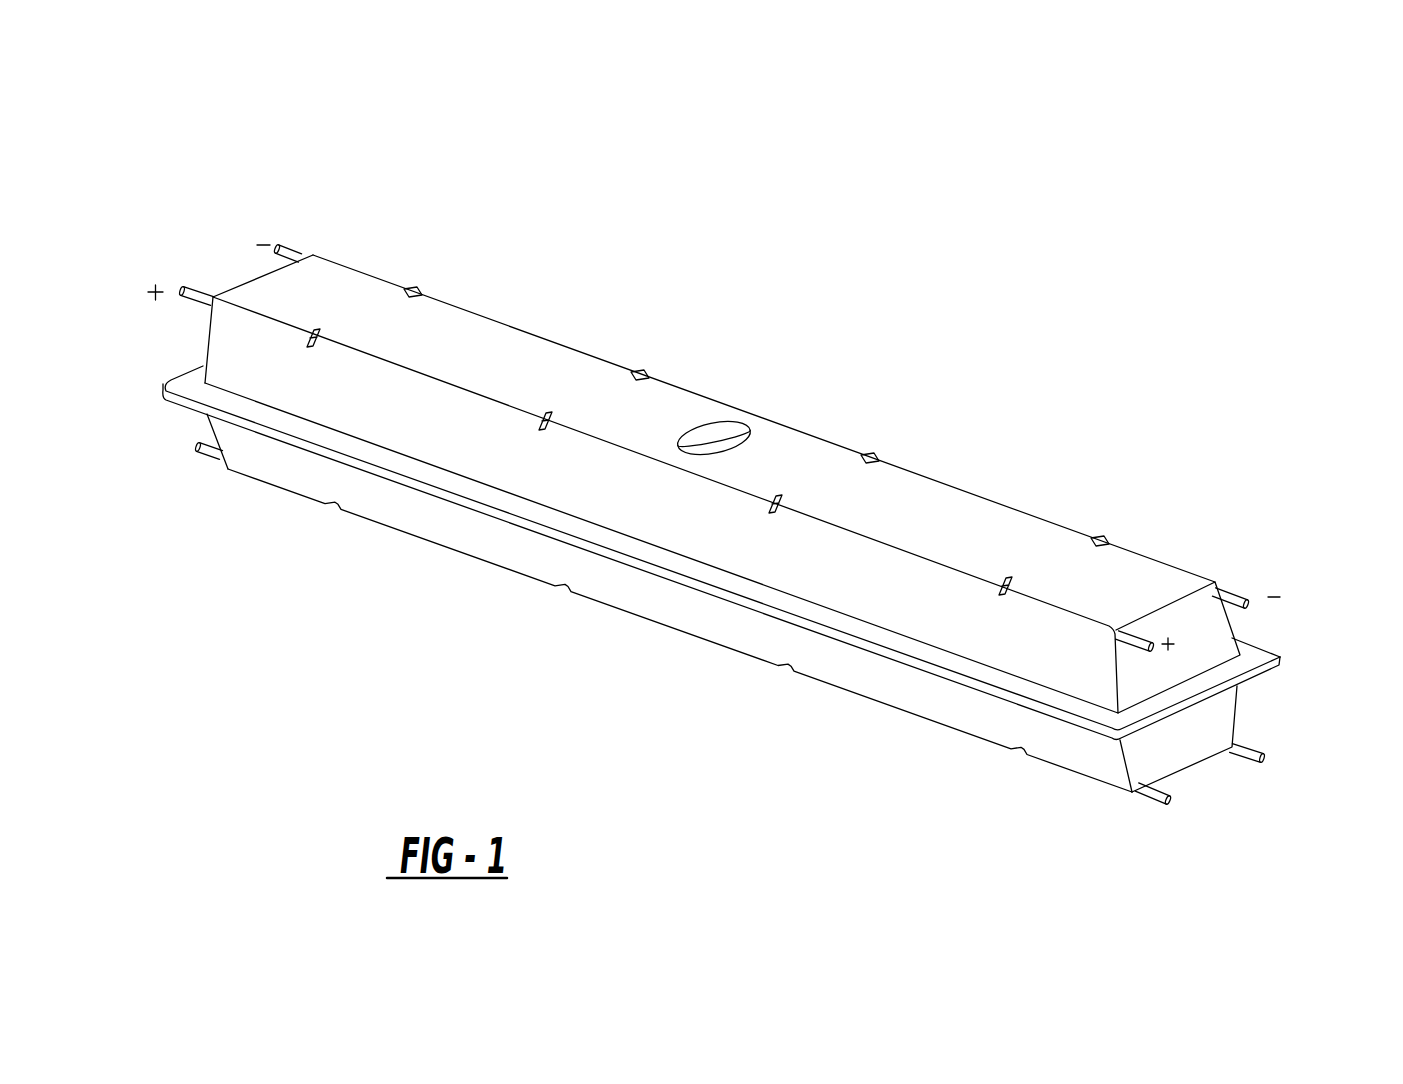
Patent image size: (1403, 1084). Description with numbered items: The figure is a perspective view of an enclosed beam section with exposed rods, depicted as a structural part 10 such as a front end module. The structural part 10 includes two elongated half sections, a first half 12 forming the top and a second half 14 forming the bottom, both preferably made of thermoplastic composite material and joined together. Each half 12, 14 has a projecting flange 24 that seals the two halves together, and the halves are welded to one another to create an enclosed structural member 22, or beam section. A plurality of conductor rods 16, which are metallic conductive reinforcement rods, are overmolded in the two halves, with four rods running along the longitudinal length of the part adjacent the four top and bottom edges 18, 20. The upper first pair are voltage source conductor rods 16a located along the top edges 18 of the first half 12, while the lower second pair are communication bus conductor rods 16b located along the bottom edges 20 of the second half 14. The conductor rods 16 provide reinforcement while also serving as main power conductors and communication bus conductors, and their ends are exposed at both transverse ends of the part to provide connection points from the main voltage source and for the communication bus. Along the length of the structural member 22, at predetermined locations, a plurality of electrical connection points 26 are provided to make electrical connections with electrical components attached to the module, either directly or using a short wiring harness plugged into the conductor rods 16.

The structural part 10 is at (1172, 362).
The first half 12 is at (611, 360).
The second half 14 is at (758, 647).
The conductor rods 16 is at (1258, 581).
The voltage source conductor rods 16a is at (190, 290).
The communication bus conductor rods 16b is at (213, 456).
The top edges 18 is at (313, 254).
The bottom edges 20 is at (1047, 770).
The structural member 22 is at (446, 632).
The projecting flange 24 is at (890, 663).
The electrical connection points 26 is at (1010, 575).